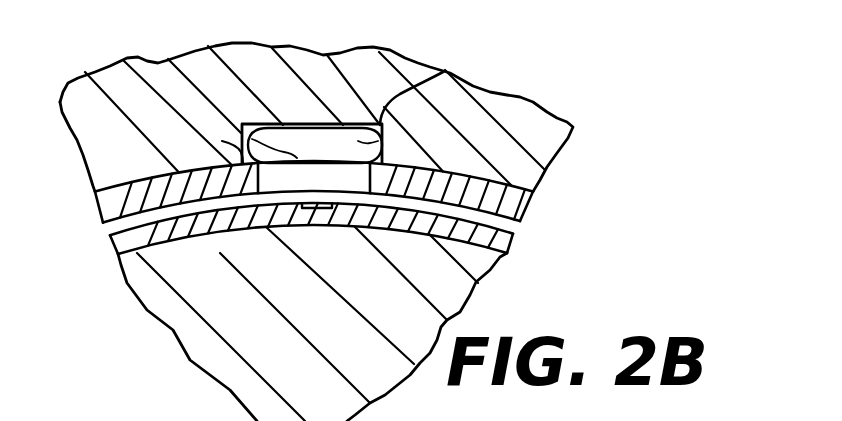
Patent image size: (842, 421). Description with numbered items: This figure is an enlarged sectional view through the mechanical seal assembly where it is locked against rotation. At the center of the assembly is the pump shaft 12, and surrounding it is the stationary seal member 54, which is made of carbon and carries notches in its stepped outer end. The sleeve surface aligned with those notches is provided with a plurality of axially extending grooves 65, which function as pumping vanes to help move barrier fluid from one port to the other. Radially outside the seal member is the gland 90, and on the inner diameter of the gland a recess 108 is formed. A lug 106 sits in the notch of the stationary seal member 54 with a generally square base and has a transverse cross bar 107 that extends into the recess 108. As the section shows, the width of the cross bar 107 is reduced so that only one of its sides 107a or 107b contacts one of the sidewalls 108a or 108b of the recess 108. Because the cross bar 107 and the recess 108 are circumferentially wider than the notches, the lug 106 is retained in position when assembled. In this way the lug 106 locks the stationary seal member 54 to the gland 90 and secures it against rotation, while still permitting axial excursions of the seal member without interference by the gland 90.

The pump shaft 12 is at (333, 333).
The stationary seal member 54 is at (208, 240).
The axially extending grooves 65 is at (320, 227).
The gland 90 is at (391, 92).
The lug 106 is at (297, 190).
The cross bar 107 is at (250, 124).
The side of cross bar 107a is at (292, 154).
The side of cross bar 107b is at (358, 141).
The recess 108 is at (303, 124).
The sidewall of recess 108a is at (222, 141).
The sidewall of recess 108b is at (443, 72).